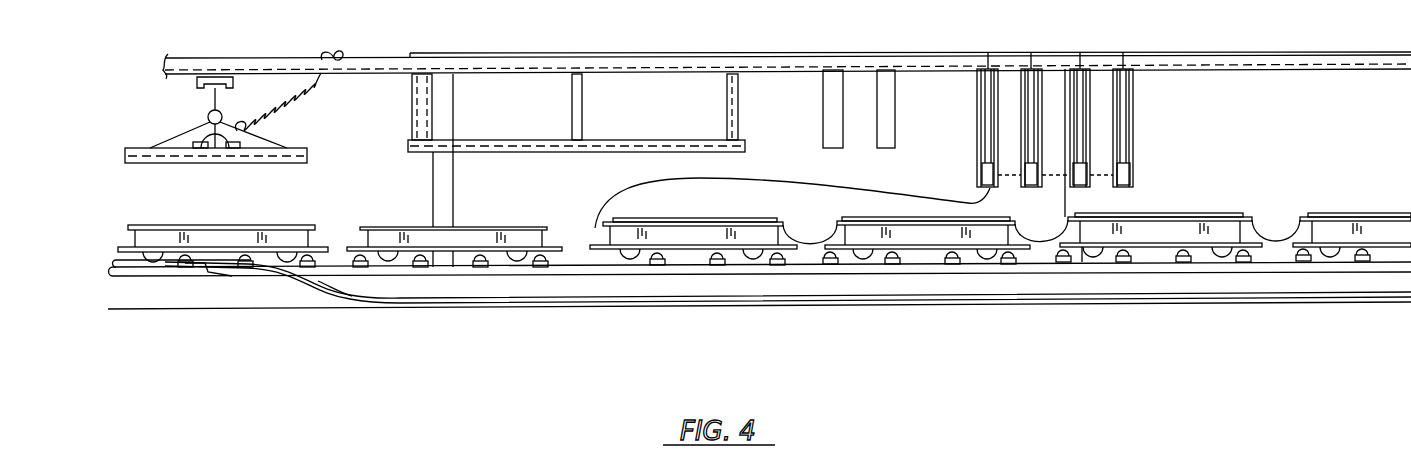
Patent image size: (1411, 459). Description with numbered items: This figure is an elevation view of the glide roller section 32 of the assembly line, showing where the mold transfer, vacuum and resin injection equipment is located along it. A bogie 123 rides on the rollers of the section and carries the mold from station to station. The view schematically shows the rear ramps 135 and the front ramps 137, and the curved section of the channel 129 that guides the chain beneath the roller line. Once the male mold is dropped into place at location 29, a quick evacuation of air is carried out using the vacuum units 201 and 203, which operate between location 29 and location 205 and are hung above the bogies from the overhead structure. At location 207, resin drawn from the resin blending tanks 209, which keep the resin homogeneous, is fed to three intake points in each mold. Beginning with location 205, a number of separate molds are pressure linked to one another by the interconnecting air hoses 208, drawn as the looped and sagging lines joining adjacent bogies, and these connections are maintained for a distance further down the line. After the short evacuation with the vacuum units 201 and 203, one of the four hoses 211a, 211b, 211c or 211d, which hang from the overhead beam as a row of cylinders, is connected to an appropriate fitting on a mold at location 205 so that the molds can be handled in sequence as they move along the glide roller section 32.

The location 29 is at (462, 260).
The glide roller section 32 is at (897, 308).
The bogie 123 is at (320, 243).
The channel 129 is at (317, 282).
The rear ramps 135 is at (212, 273).
The front ramps 137 is at (338, 280).
The vacuum unit 201 is at (432, 184).
The vacuum unit 203 is at (453, 184).
The location 205 is at (690, 258).
The location 207 is at (923, 255).
The interconnecting air hoses 208 is at (806, 245).
The resin blending tanks 209 is at (843, 148).
The hose 211a is at (977, 140).
The hose 211b is at (1041, 189).
The hose 211c is at (1088, 186).
The hose 211d is at (1133, 130).